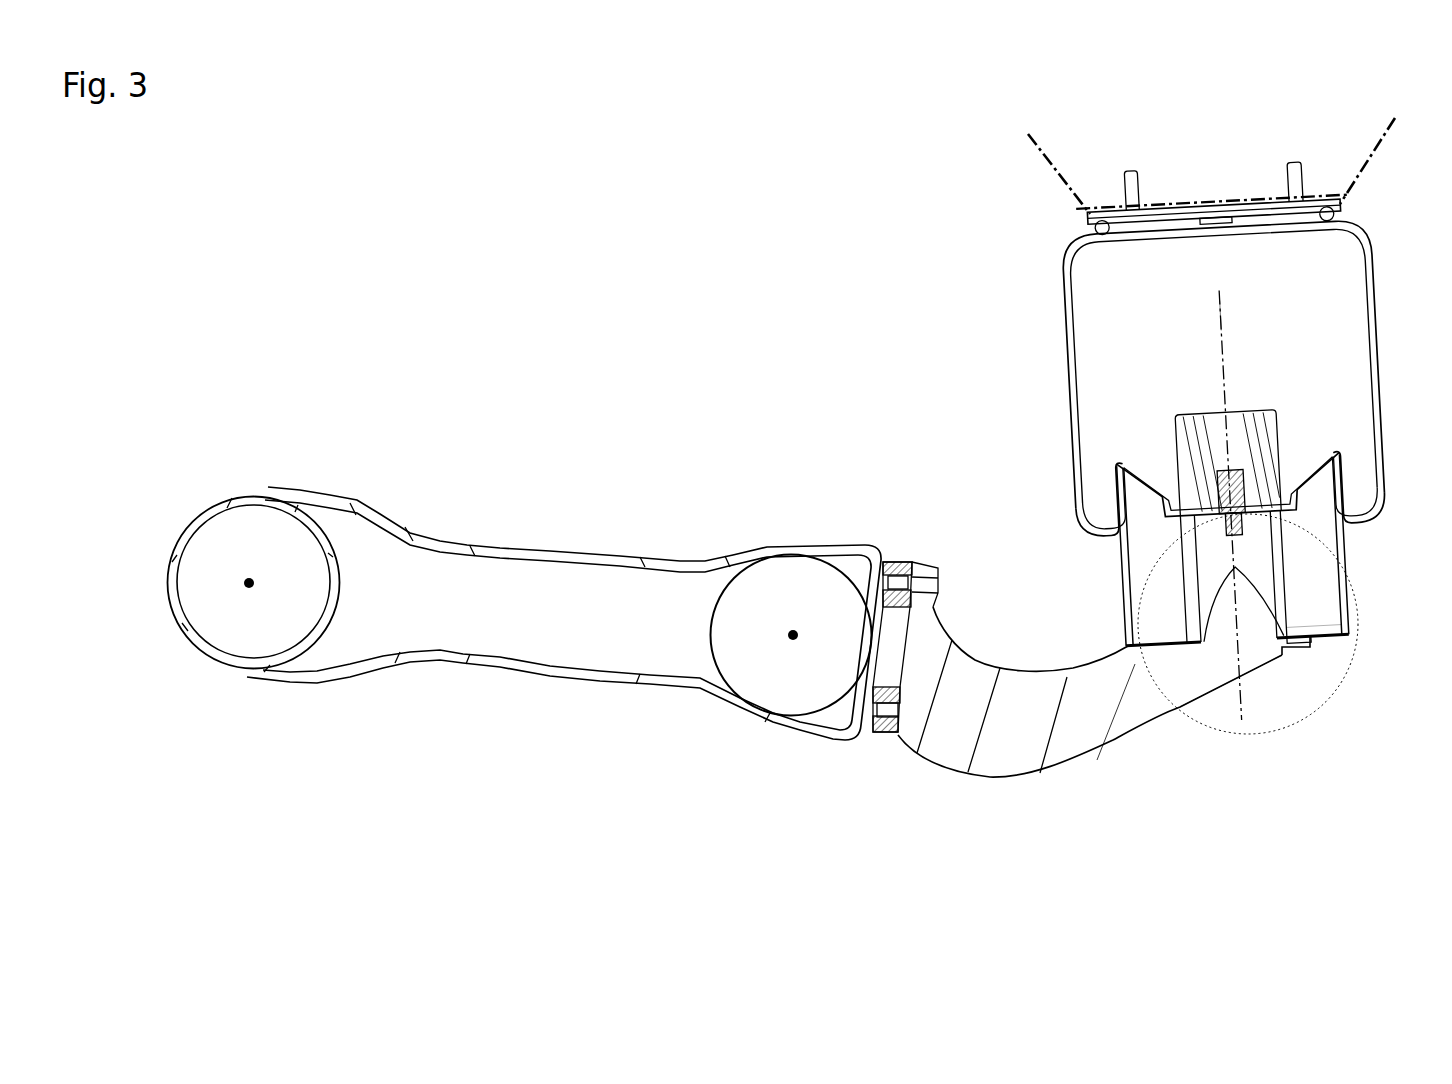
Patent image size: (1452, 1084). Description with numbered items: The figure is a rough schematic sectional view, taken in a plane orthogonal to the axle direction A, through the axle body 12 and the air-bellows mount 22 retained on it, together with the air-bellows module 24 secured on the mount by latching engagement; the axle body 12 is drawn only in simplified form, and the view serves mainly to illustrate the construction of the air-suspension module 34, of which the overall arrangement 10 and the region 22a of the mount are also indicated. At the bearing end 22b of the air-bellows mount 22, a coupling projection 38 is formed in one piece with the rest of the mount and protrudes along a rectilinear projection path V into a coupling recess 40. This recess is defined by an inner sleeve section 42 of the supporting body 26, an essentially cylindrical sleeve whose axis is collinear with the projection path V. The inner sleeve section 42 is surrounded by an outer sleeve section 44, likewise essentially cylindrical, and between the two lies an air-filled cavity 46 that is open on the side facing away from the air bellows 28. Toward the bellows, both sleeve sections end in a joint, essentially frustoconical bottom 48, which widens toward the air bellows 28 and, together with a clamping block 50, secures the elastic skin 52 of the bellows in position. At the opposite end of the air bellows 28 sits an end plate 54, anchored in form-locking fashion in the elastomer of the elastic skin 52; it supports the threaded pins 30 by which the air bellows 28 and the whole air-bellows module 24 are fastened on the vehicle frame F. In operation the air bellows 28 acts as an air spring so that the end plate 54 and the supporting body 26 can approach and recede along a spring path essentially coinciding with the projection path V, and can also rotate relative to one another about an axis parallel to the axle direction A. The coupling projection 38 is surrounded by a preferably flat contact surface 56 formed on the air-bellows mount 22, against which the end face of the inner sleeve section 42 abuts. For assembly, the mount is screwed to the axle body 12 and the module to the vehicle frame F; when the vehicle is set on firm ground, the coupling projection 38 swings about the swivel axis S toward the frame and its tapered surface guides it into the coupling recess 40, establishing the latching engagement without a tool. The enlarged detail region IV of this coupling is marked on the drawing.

The axle suspension 10 is at (216, 886).
The axle body 12 is at (485, 660).
The air-bellows mount 22 is at (1146, 730).
The first end of bracket / clamp bolts 22a is at (946, 558).
The bearing end 22b is at (1298, 666).
The air-bellows module 24 is at (995, 240).
The supporting body 26 is at (1277, 559).
The air bellows 28 is at (1337, 268).
The threaded pins 30 is at (1296, 180).
The air-suspension module 34 is at (1275, 779).
The coupling projection 38 is at (1252, 624).
The coupling recess 40 is at (1242, 603).
The inner sleeve section 42 is at (1233, 577).
The outer sleeve section 44 is at (1233, 549).
The air-filled cavity 46 is at (1313, 626).
The bottom 48 is at (1237, 640).
The clamping block 50 is at (1287, 435).
The elastic skin 52 is at (1067, 340).
The end plate 54 is at (1340, 211).
The contact surface 56 is at (1299, 639).
The swivel axis S is at (248, 590).
The axle direction A is at (796, 630).
The vehicle frame F is at (1045, 161).
The detail IV is at (1206, 727).
The projection path V is at (1218, 316).